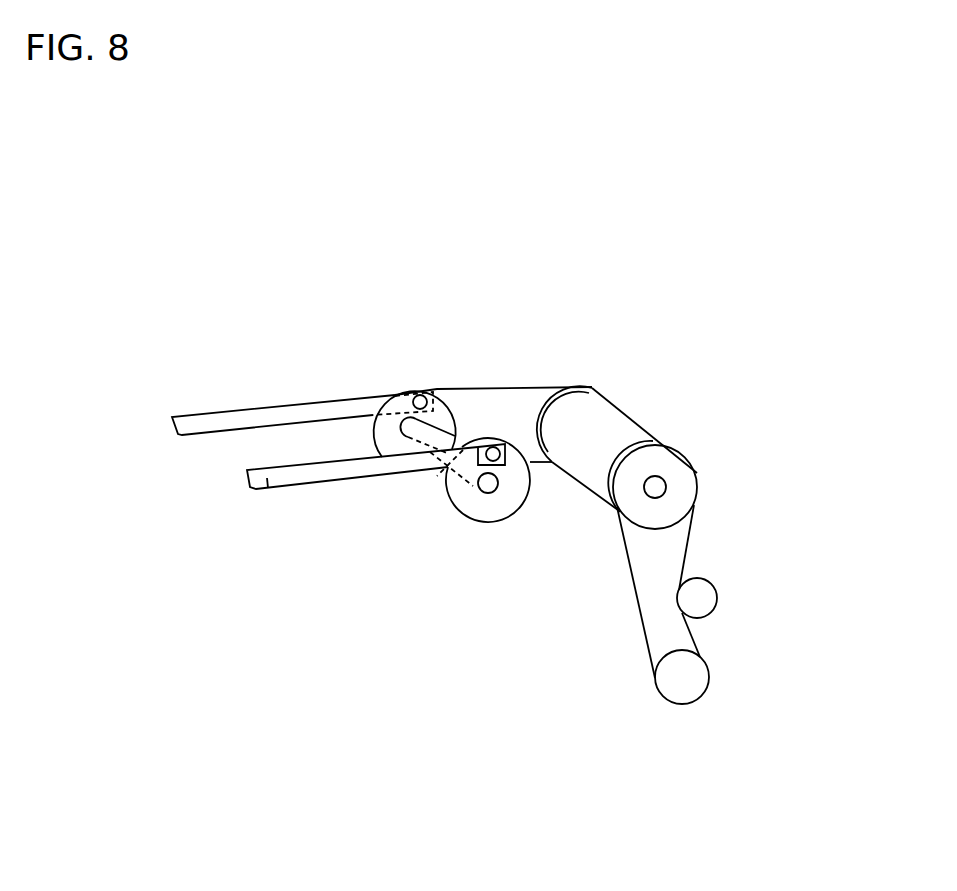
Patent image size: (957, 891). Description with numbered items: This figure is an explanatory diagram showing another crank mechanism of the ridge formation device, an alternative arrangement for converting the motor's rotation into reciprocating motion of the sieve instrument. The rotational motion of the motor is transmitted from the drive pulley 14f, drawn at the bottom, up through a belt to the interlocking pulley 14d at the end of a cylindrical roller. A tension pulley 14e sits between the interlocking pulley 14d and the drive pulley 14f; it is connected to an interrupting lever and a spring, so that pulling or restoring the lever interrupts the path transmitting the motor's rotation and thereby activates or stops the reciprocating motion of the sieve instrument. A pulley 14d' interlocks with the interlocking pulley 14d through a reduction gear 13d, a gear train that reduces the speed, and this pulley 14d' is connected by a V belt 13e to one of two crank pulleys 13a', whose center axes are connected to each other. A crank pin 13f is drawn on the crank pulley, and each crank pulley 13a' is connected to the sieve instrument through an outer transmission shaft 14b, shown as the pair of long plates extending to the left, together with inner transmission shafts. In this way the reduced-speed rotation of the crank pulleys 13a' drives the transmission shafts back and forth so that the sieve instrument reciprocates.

The crank pulley 13a' is at (457, 523).
The reduction gear 13d is at (605, 425).
The V belt 13e is at (497, 388).
The crank pin 13f is at (420, 395).
The outer transmission shaft 14b is at (212, 423).
The interlocking pulley 14d is at (688, 487).
The pulley 14d' is at (577, 405).
The tension pulley 14e is at (698, 598).
The drive pulley 14f is at (681, 687).